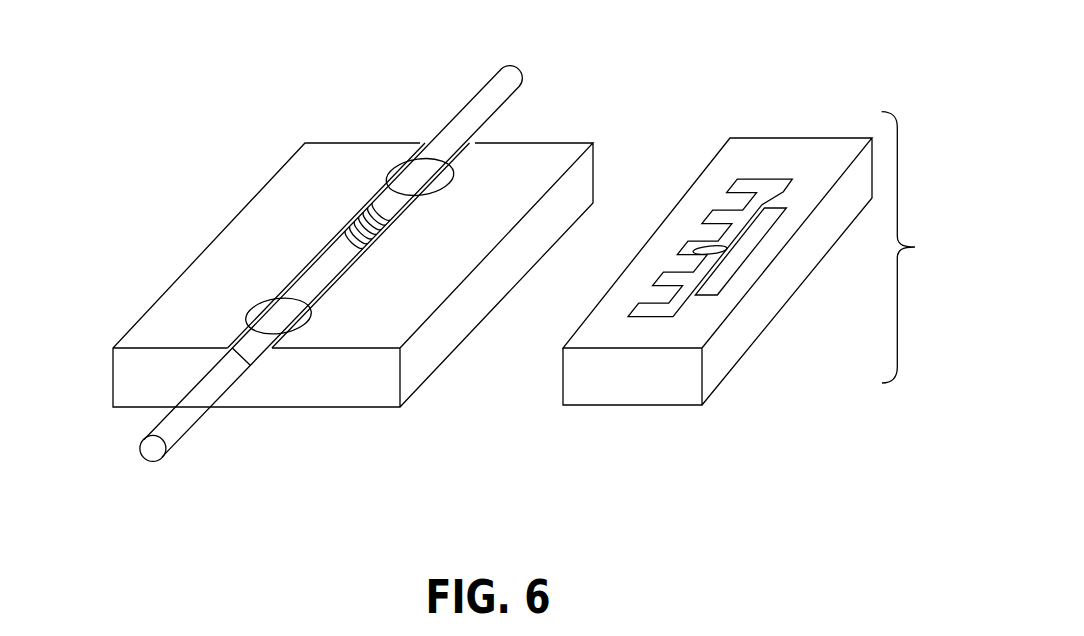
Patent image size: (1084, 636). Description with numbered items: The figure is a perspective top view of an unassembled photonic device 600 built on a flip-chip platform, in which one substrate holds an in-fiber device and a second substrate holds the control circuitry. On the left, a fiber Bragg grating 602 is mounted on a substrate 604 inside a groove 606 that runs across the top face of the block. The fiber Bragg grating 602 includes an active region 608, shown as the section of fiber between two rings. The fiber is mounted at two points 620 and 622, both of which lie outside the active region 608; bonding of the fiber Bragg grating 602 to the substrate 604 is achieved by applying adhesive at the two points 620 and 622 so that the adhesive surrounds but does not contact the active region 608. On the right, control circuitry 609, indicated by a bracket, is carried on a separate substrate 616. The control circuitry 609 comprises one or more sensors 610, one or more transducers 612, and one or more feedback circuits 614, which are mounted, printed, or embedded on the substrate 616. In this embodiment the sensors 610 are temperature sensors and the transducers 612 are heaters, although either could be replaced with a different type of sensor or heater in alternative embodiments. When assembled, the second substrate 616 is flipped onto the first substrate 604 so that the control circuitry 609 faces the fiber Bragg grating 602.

The photonic device 600 is at (790, 30).
The fiber Bragg grating 602 is at (152, 453).
The substrate 604 is at (317, 397).
The groove 606 is at (231, 348).
The active region 608 is at (354, 223).
The control circuitry 609 is at (919, 247).
The sensors 610 is at (731, 190).
The transducers 612 is at (742, 248).
The feedback circuits 614 is at (740, 251).
The substrate 616 is at (618, 395).
The mounting point 620 is at (420, 152).
The mounting point 622 is at (257, 307).